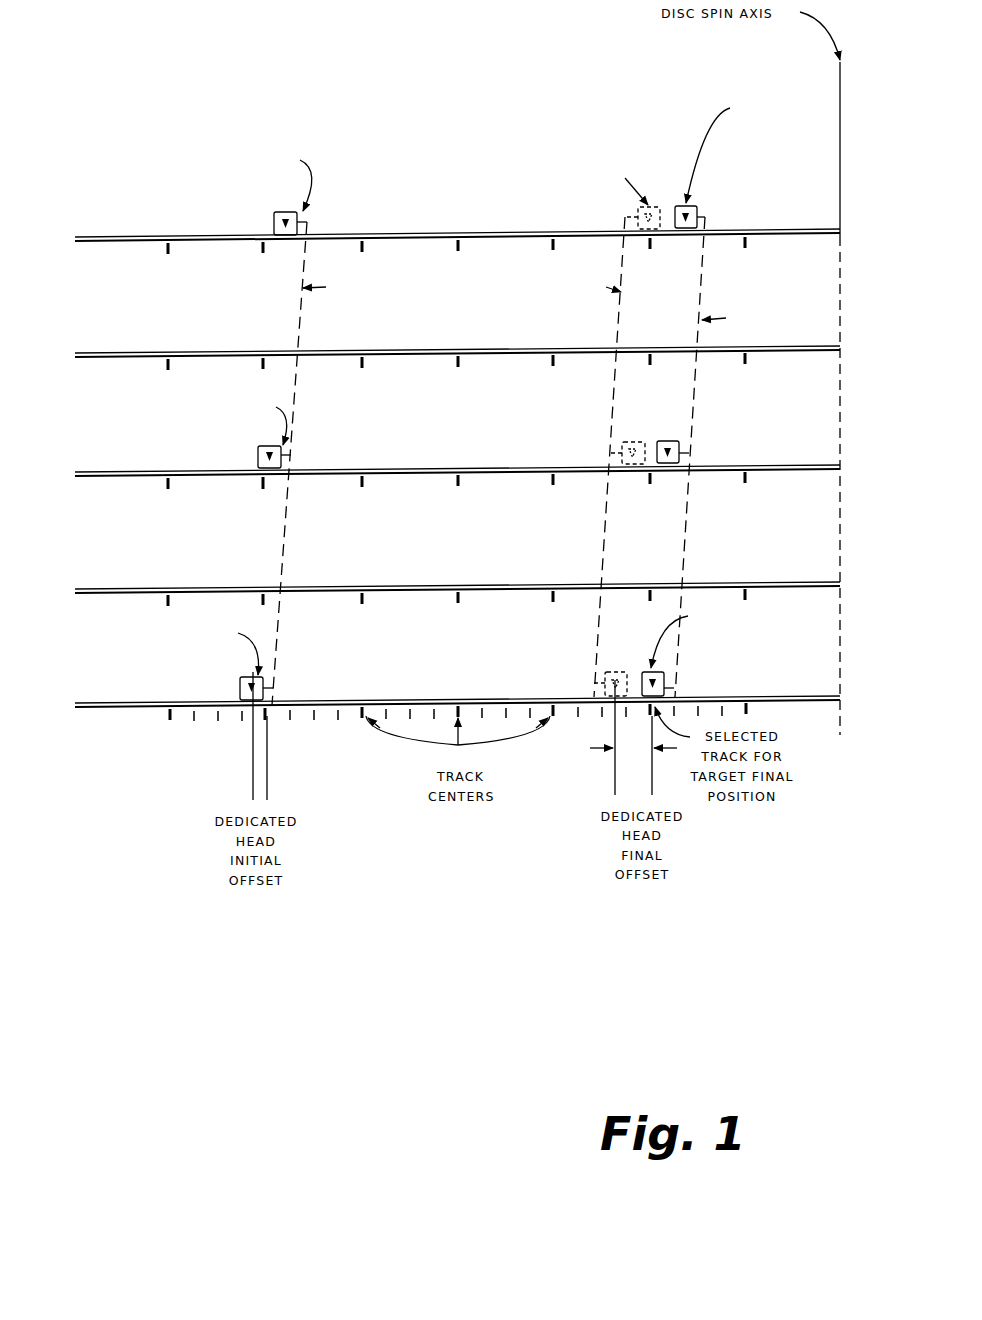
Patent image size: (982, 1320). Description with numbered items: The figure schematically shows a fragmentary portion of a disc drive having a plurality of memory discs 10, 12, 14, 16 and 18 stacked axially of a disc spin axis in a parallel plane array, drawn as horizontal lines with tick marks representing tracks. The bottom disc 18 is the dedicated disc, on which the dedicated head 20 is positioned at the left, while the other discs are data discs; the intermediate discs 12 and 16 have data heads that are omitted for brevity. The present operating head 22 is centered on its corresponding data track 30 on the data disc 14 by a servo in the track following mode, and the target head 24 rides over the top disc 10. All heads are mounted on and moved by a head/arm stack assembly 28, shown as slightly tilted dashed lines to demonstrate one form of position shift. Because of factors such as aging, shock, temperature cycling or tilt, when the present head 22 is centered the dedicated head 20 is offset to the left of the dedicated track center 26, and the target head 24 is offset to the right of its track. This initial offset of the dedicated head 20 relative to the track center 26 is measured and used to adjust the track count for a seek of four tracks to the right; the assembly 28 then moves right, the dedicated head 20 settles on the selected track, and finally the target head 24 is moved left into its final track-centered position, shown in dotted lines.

The memory disc 10 is at (436, 231).
The memory disc 12 is at (432, 347).
The memory disc 14 is at (427, 466).
The memory disc 16 is at (426, 582).
The memory disc 18 is at (426, 696).
The dedicated head 20 is at (237, 683).
The present operating head 22 is at (256, 447).
The target head 24 is at (271, 212).
The dedicated track center 26 is at (272, 704).
The head/arm stack assembly 28 is at (301, 390).
The data track 30 is at (262, 492).